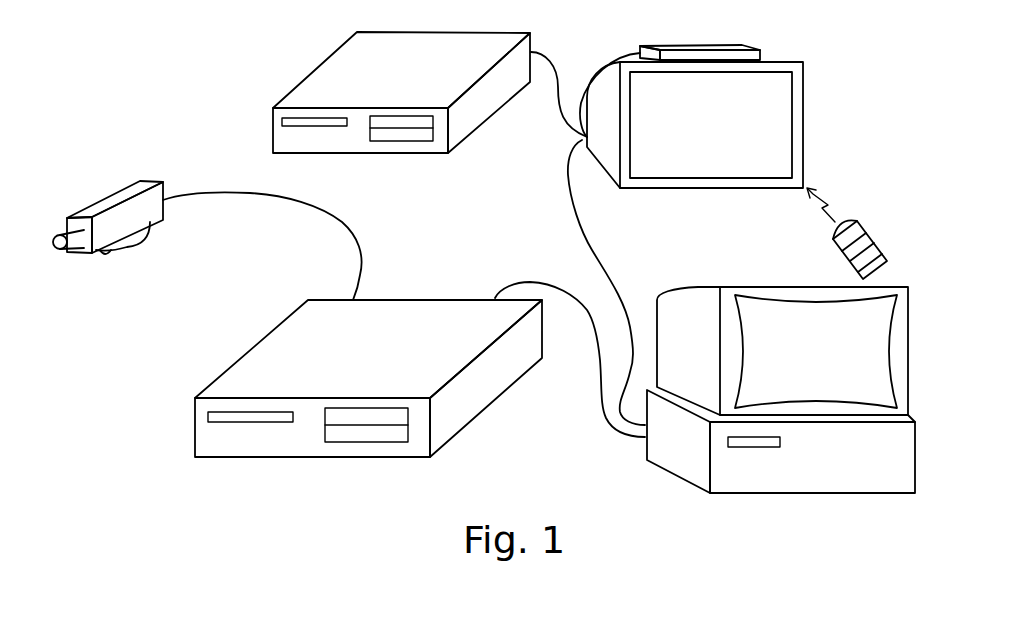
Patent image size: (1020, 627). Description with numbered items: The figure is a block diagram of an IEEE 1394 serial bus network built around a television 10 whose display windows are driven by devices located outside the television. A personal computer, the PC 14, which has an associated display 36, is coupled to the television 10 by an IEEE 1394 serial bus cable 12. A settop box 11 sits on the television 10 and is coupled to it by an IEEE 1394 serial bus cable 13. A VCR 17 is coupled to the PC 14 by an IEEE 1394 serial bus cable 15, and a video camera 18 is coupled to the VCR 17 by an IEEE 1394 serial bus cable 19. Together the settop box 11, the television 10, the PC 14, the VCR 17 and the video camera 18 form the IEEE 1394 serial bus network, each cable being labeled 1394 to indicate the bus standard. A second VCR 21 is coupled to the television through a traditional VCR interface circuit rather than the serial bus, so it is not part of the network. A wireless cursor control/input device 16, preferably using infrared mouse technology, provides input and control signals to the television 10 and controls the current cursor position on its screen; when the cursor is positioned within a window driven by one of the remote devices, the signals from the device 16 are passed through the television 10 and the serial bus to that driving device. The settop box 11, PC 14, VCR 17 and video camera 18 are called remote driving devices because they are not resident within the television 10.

The television 10 is at (803, 107).
The settop box 11 is at (750, 45).
The IEEE 1394 serial bus cable 12 is at (615, 288).
The IEEE 1394 serial bus cable 13 is at (588, 72).
The personal computer 14 is at (815, 493).
The IEEE 1394 serial bus cable 15 is at (598, 357).
The wireless cursor control/input device 16 is at (870, 233).
The VCR 17 is at (485, 410).
The video camera 18 is at (103, 200).
The IEEE 1394 serial bus cable 19 is at (347, 220).
The second VCR 21 is at (318, 66).
The display 36 is at (773, 285).
The IEEE 1394 serial bus 1394 is at (410, 232).